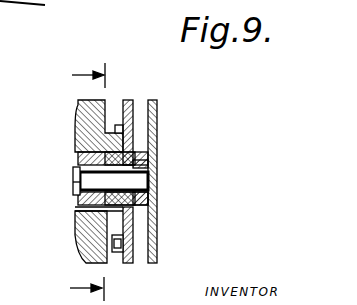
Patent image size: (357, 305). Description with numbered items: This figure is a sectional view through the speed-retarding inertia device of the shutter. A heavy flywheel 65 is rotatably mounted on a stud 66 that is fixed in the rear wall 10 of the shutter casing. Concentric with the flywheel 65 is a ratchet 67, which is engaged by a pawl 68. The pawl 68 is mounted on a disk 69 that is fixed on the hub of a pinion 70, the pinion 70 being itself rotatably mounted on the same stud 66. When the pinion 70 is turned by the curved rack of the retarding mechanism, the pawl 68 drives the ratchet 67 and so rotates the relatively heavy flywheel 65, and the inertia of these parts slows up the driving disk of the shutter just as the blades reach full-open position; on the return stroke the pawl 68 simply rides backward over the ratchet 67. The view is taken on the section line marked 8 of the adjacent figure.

The section line 8- 8 is at (95, 183).
The rear wall 10 is at (157, 127).
The flywheel 65 is at (82, 106).
The stud 66 is at (157, 182).
The ratchet 67 is at (113, 136).
The pawl 68 is at (118, 252).
The disk 69 is at (136, 229).
The pinion 70 is at (157, 151).